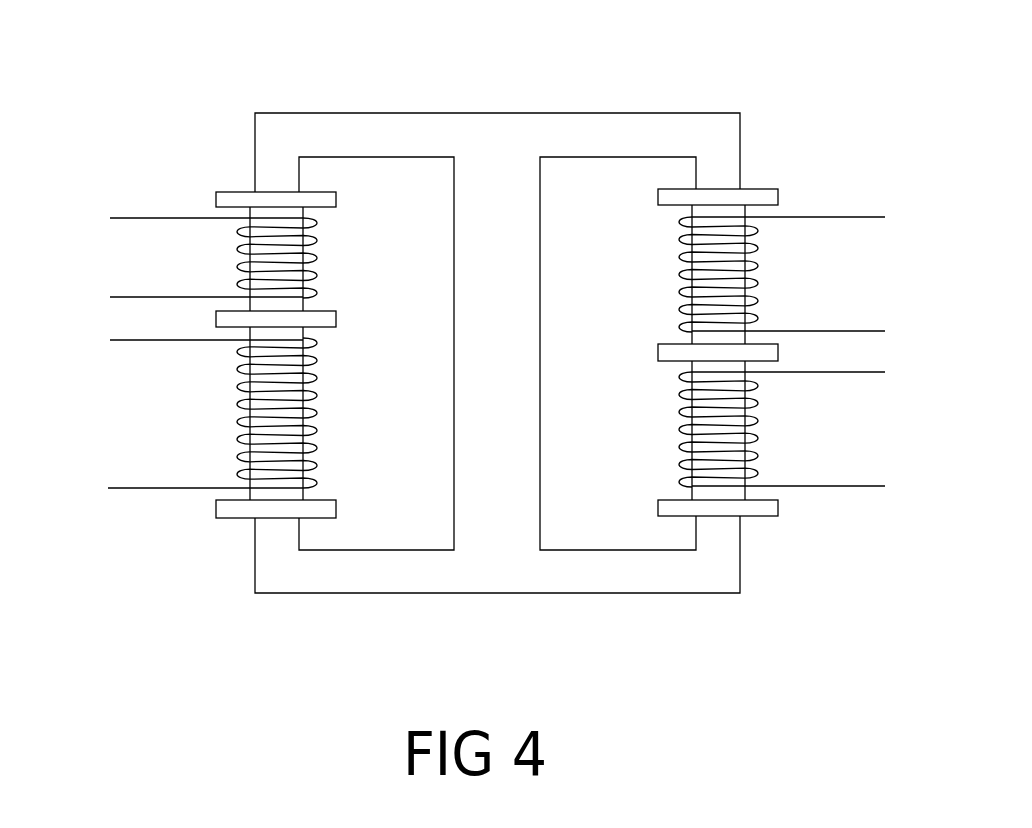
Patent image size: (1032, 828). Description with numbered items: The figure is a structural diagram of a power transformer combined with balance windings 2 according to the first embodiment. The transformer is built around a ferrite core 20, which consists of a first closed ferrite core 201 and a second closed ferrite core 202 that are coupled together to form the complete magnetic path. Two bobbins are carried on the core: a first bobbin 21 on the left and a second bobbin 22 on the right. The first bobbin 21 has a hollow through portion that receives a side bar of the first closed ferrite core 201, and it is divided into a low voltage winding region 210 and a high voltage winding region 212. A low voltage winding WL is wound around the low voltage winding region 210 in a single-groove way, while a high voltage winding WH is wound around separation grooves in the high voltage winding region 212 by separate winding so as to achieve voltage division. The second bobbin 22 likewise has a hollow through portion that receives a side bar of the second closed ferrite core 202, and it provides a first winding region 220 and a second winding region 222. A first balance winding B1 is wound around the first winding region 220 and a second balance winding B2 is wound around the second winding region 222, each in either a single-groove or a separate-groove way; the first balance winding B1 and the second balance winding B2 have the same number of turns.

The power transformer combined with balance windings 2 is at (885, 35).
The ferrite core 20 is at (593, 112).
The first closed ferrite core 201 is at (368, 143).
The second closed ferrite core 202 is at (642, 143).
The first bobbin 21 is at (228, 190).
The second bobbin 22 is at (776, 188).
The low voltage winding region 210 is at (246, 239).
The high voltage winding region 212 is at (246, 413).
The first winding region 220 is at (752, 292).
The second winding region 222 is at (752, 448).
The low voltage winding WL is at (136, 218).
The high voltage winding WH is at (138, 340).
The first balance winding B1 is at (818, 220).
The second balance winding B2 is at (818, 375).